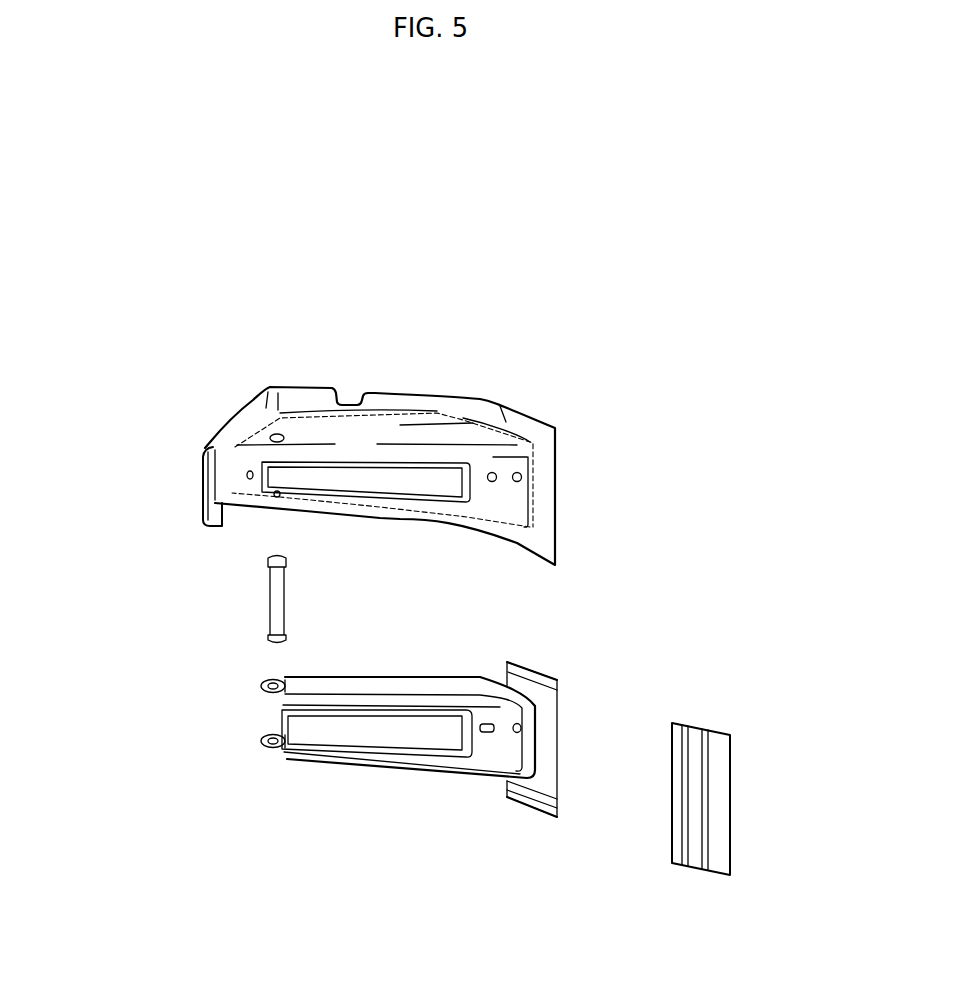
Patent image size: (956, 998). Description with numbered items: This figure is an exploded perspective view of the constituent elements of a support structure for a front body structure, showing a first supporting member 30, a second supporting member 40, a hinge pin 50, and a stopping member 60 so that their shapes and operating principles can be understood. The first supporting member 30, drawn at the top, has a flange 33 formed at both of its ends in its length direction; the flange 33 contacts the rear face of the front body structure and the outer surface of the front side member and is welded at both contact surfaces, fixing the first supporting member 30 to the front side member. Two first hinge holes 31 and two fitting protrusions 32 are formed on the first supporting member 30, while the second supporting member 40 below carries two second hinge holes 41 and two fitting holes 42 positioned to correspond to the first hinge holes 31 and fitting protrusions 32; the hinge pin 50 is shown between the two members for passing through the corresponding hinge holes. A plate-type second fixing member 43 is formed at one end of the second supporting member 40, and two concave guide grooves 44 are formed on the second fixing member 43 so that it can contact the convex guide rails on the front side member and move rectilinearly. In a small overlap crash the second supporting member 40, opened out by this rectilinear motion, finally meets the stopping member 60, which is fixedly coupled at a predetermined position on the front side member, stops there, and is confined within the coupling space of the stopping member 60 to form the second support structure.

The first supporting member 30 is at (406, 390).
The first hinge holes 31 is at (278, 494).
The fitting protrusions 32 is at (521, 478).
The flange 33 is at (268, 390).
The second supporting member 40 is at (456, 778).
The second hinge holes 41 is at (262, 741).
The fitting holes 42 is at (518, 722).
The second fixing member 43 is at (550, 776).
The concave guide grooves 44 is at (558, 795).
The hinge pin 50 is at (275, 600).
The stopping member 60 is at (693, 858).